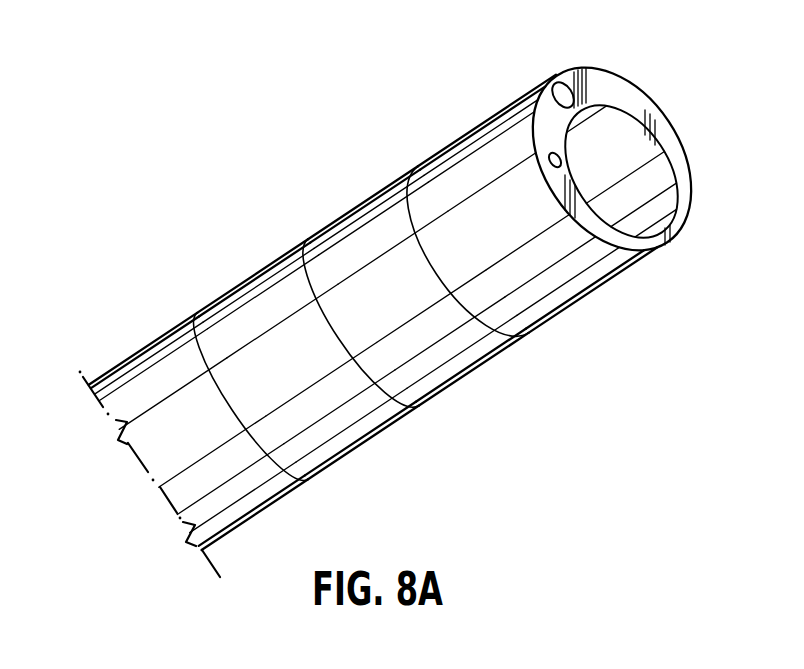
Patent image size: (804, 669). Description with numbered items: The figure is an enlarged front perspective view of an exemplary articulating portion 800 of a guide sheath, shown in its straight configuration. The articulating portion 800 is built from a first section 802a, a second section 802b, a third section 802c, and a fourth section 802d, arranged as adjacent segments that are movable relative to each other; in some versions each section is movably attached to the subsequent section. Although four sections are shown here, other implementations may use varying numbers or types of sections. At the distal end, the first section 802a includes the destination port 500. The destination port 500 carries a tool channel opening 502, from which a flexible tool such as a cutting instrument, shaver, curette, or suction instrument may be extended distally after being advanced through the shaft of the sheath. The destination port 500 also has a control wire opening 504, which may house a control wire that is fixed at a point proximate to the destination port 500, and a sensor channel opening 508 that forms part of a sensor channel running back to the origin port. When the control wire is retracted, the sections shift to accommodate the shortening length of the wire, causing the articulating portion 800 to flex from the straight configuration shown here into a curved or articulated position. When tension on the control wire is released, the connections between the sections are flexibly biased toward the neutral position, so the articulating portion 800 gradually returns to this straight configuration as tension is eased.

The destination port 500 is at (670, 121).
The tool channel opening 502 is at (628, 193).
The control wire opening 504 is at (553, 157).
The sensor channel opening 508 is at (563, 83).
The articulating portion 800 is at (199, 205).
The first section 802a is at (543, 293).
The second section 802b is at (430, 363).
The third section 802c is at (317, 433).
The fourth section 802d is at (160, 443).